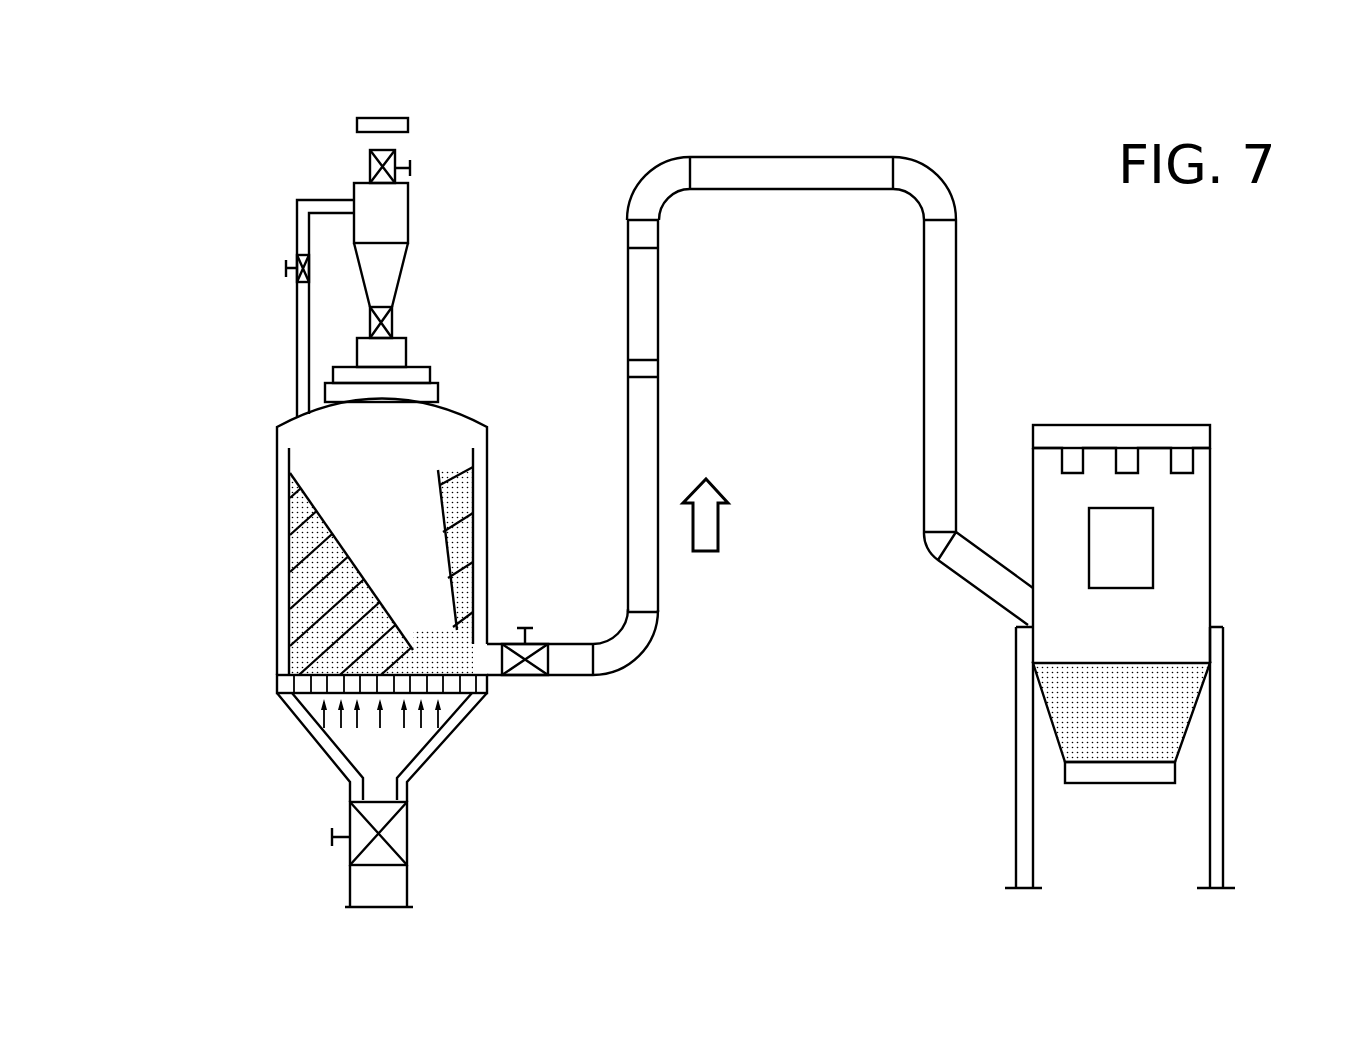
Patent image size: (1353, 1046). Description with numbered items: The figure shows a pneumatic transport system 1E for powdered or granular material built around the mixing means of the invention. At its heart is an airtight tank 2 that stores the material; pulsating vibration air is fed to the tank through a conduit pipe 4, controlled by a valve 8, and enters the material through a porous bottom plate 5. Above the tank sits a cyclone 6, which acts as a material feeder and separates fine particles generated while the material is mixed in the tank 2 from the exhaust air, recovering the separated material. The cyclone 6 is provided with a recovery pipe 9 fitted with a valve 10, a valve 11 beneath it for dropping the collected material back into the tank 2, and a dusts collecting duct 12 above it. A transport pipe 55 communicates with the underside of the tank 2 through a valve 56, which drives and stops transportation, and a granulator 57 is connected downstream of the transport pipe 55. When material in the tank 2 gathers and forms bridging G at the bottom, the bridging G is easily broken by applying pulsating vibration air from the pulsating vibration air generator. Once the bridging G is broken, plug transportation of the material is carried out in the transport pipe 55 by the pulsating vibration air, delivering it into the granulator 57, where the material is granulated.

The pneumatic transport system 1E is at (584, 115).
The tank 2 is at (277, 585).
The conduit pipe 4 is at (408, 785).
The porous bottom plate 5 is at (452, 688).
The cyclone 6 is at (399, 283).
The valve 8 is at (408, 830).
The recovery pipe 9 is at (297, 330).
The valve 10 is at (286, 263).
The valve 11 is at (397, 325).
The dusts collecting duct 12 is at (412, 167).
The transport pipe 55 is at (620, 676).
The valve 56 is at (530, 627).
The granulator 57 is at (1212, 556).
The bridging G is at (450, 570).